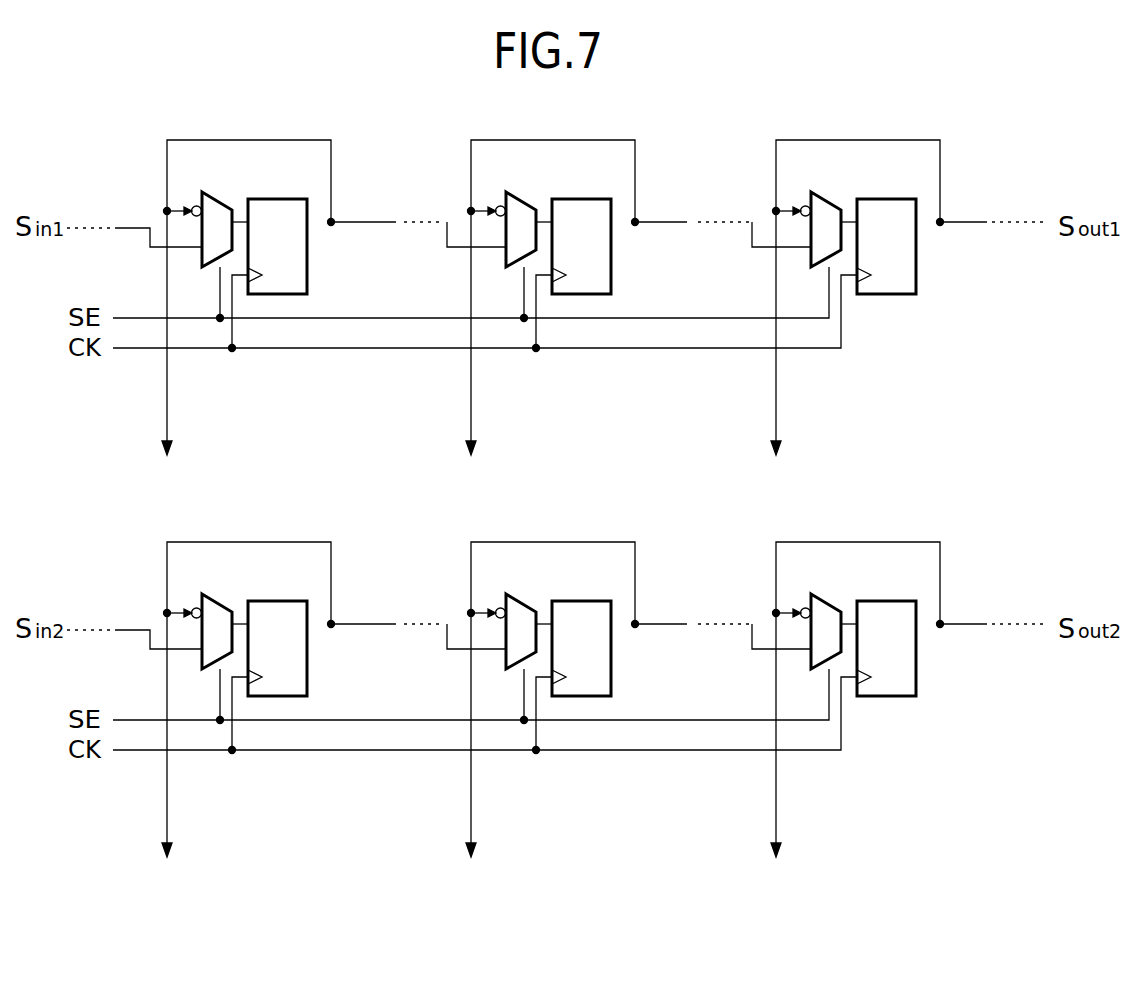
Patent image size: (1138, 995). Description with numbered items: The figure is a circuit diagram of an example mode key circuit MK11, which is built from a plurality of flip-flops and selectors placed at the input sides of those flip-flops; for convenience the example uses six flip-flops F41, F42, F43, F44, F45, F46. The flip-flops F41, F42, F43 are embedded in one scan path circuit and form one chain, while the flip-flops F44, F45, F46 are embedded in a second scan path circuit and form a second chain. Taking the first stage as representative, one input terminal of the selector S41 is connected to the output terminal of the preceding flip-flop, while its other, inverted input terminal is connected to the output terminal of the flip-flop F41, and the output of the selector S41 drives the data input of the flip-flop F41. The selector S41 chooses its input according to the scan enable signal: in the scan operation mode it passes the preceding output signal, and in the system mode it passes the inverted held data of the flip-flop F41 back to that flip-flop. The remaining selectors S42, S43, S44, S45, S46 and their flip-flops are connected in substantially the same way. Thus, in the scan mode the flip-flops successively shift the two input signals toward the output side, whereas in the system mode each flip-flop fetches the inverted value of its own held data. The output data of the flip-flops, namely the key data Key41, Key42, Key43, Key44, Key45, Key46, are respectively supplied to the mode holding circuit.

The mode key circuit MK11 is at (218, 98).
The selector S41 is at (218, 199).
The selector S42 is at (549, 213).
The selector S43 is at (854, 213).
The selector S44 is at (245, 615).
The selector S45 is at (549, 615).
The selector S46 is at (854, 615).
The flip-flop F41 is at (307, 255).
The flip-flop F42 is at (617, 246).
The flip-flop F43 is at (922, 246).
The flip-flop F44 is at (313, 648).
The flip-flop F45 is at (617, 648).
The flip-flop F46 is at (922, 648).
The key data Key41 is at (238, 314).
The key data Key42 is at (542, 314).
The key data Key43 is at (847, 314).
The key data Key44 is at (238, 716).
The key data Key45 is at (542, 716).
The key data Key46 is at (847, 716).